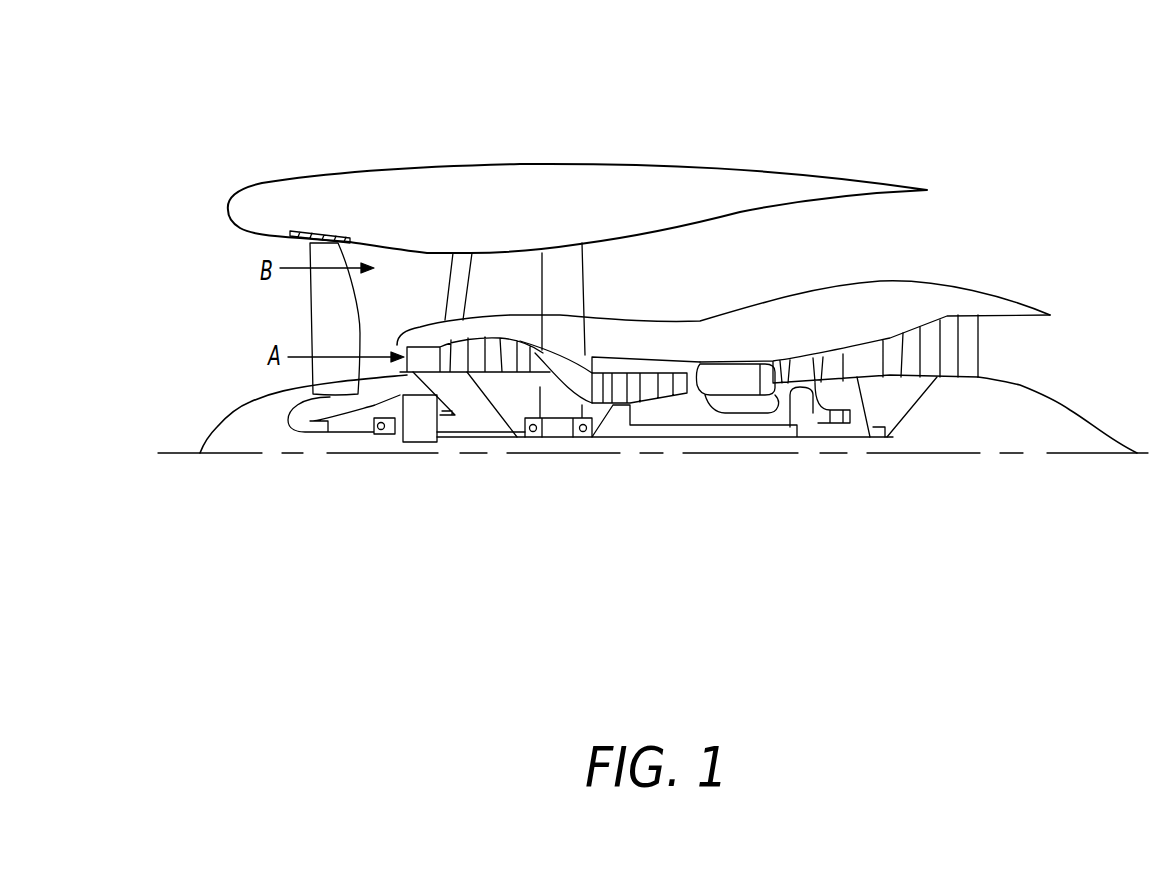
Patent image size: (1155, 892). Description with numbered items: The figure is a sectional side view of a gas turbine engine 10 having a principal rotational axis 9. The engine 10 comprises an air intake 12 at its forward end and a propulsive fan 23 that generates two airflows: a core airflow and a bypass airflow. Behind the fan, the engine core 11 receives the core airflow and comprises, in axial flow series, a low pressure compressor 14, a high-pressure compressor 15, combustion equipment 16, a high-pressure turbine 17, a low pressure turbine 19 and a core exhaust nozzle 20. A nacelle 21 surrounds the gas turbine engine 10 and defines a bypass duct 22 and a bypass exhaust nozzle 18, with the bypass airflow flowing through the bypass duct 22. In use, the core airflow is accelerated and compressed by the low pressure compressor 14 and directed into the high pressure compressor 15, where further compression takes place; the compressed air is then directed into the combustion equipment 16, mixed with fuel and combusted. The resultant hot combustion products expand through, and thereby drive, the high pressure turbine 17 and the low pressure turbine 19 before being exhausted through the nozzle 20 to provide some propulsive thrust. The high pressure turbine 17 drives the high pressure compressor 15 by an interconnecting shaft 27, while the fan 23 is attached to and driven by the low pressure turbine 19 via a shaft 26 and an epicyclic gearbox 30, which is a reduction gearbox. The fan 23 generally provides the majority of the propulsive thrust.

The principal rotational axis 9 is at (925, 455).
The gas turbine engine 10 is at (314, 181).
The core 11 is at (698, 343).
The air intake 12 is at (256, 248).
The low pressure compressor 14 is at (495, 350).
The high-pressure compressor 15 is at (650, 383).
The combustion equipment 16 is at (735, 385).
The high-pressure turbine 17 is at (799, 367).
The bypass exhaust nozzle 18 is at (915, 234).
The low pressure turbine 19 is at (947, 333).
The core exhaust nozzle 20 is at (1012, 345).
The nacelle 21 is at (557, 177).
The bypass duct 22 is at (868, 250).
The propulsive fan 23 is at (315, 320).
The shaft 26 is at (643, 440).
The interconnecting shaft 27 is at (687, 437).
The epicyclic gearbox 30 is at (417, 430).